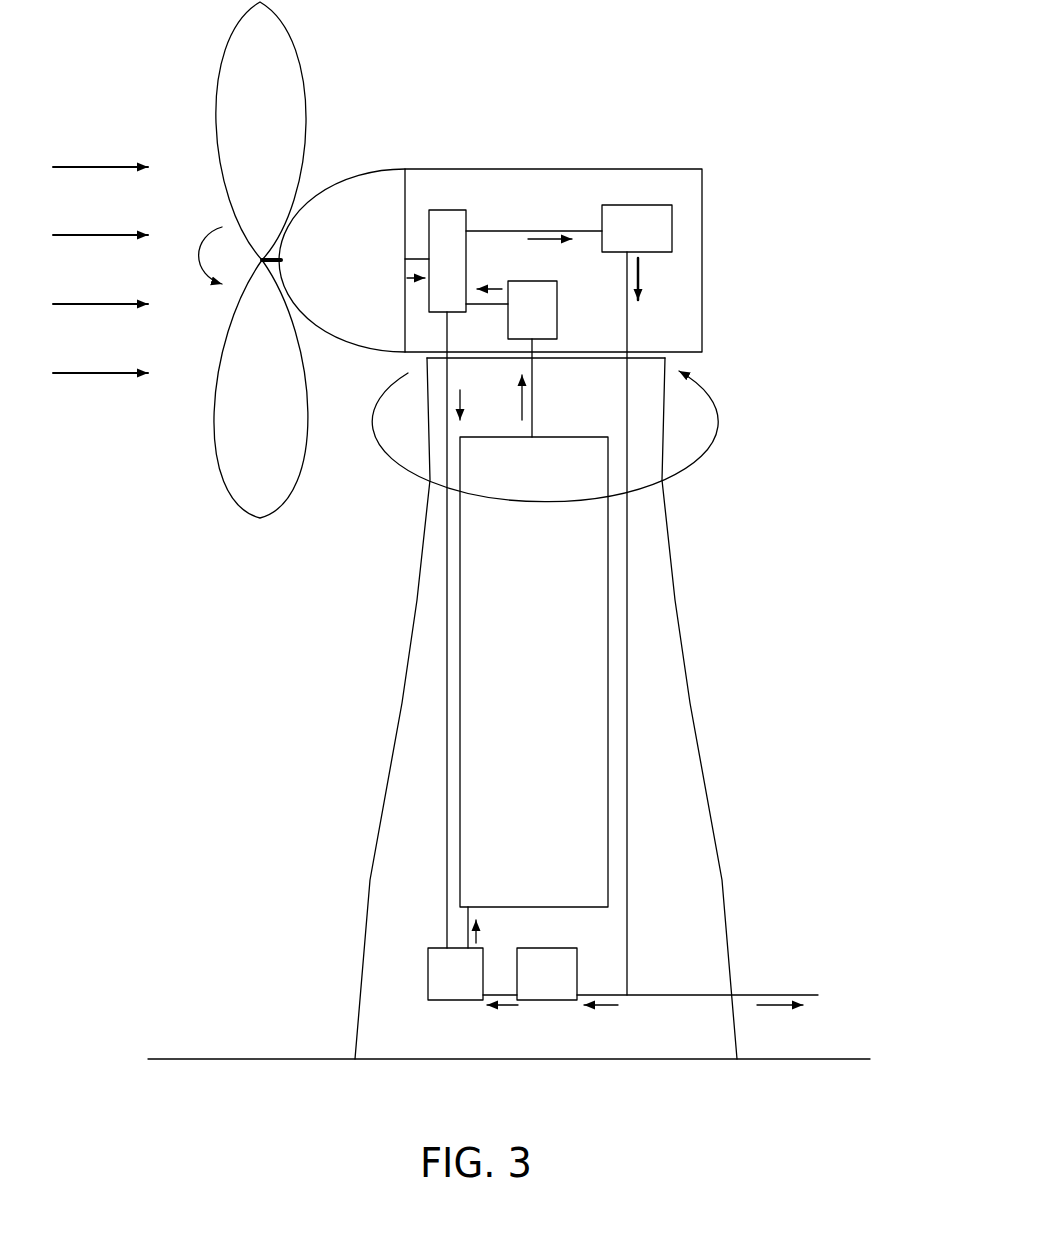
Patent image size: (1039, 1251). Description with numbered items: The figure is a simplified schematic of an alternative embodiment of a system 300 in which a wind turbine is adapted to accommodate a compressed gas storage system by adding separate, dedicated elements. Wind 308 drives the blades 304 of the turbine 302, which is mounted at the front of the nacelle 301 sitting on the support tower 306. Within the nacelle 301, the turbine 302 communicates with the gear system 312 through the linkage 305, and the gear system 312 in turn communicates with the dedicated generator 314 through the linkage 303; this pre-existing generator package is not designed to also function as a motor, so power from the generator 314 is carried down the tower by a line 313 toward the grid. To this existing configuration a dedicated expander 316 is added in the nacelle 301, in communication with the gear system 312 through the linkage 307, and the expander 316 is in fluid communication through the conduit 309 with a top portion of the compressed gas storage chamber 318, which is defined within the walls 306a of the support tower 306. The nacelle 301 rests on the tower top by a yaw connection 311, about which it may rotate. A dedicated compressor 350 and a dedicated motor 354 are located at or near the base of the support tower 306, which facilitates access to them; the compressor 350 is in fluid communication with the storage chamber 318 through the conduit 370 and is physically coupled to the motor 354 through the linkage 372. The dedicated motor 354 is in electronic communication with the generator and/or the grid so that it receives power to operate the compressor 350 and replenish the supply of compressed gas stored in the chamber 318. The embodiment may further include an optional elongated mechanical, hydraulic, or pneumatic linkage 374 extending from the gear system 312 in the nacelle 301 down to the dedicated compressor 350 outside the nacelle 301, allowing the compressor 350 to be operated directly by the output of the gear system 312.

The system 300 is at (704, 88).
The nacelle 301 is at (510, 168).
The turbine 302 is at (370, 317).
The linkage 303 is at (485, 233).
The rotor blades 304 is at (288, 126).
The linkage 305 is at (410, 257).
The support tower 306 is at (343, 667).
The walls 306a is at (365, 742).
The linkage 307 is at (466, 306).
The wind 308 is at (97, 156).
The conduit 309 is at (533, 362).
The yaw bearing 311 is at (680, 349).
The gear system 312 is at (454, 210).
The electrical power cable 313 is at (630, 667).
The dedicated generator 314 is at (660, 252).
The dedicated expander 316 is at (557, 311).
The compressed gas storage chamber 318 is at (555, 861).
The dedicated compressor 350 is at (450, 1002).
The dedicated motor 354 is at (540, 1002).
The conduit 370 is at (468, 912).
The linkage 372 is at (488, 993).
The elongated linkage 374 is at (448, 372).